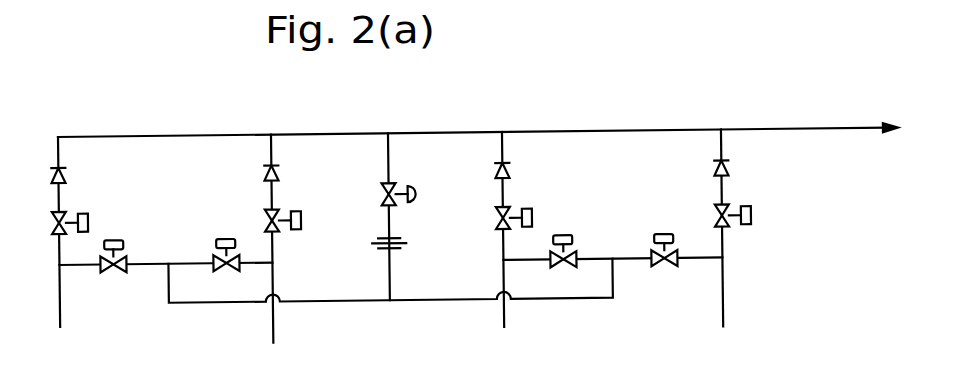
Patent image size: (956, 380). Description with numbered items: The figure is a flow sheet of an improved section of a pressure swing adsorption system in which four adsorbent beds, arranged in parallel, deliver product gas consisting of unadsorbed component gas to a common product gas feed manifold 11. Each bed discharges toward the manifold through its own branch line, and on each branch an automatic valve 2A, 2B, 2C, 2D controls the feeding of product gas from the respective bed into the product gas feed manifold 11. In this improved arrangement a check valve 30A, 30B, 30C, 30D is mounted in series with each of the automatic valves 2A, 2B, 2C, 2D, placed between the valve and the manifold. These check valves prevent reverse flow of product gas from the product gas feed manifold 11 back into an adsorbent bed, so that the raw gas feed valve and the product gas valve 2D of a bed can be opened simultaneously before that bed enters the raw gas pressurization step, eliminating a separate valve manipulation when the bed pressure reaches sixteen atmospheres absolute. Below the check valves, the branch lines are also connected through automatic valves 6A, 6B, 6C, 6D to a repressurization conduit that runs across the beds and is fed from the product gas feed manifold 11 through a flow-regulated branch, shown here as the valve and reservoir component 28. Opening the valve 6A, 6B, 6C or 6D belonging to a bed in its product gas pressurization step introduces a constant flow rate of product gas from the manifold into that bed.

The product gas feed manifold 11 is at (832, 137).
The check valve 30A is at (66, 181).
The check valve 30B is at (279, 181).
The check valve 30C is at (510, 180).
The check valve 30D is at (729, 177).
The automatic valve 2A is at (88, 222).
The automatic valve 2B is at (296, 233).
The automatic valve 2C is at (532, 219).
The automatic valve 2D is at (751, 223).
The automatic valve 6A is at (108, 270).
The automatic valve 6B is at (216, 260).
The automatic valve 6C is at (576, 261).
The automatic valve 6D is at (664, 268).
The relief valve with reservoir 28 is at (396, 190).